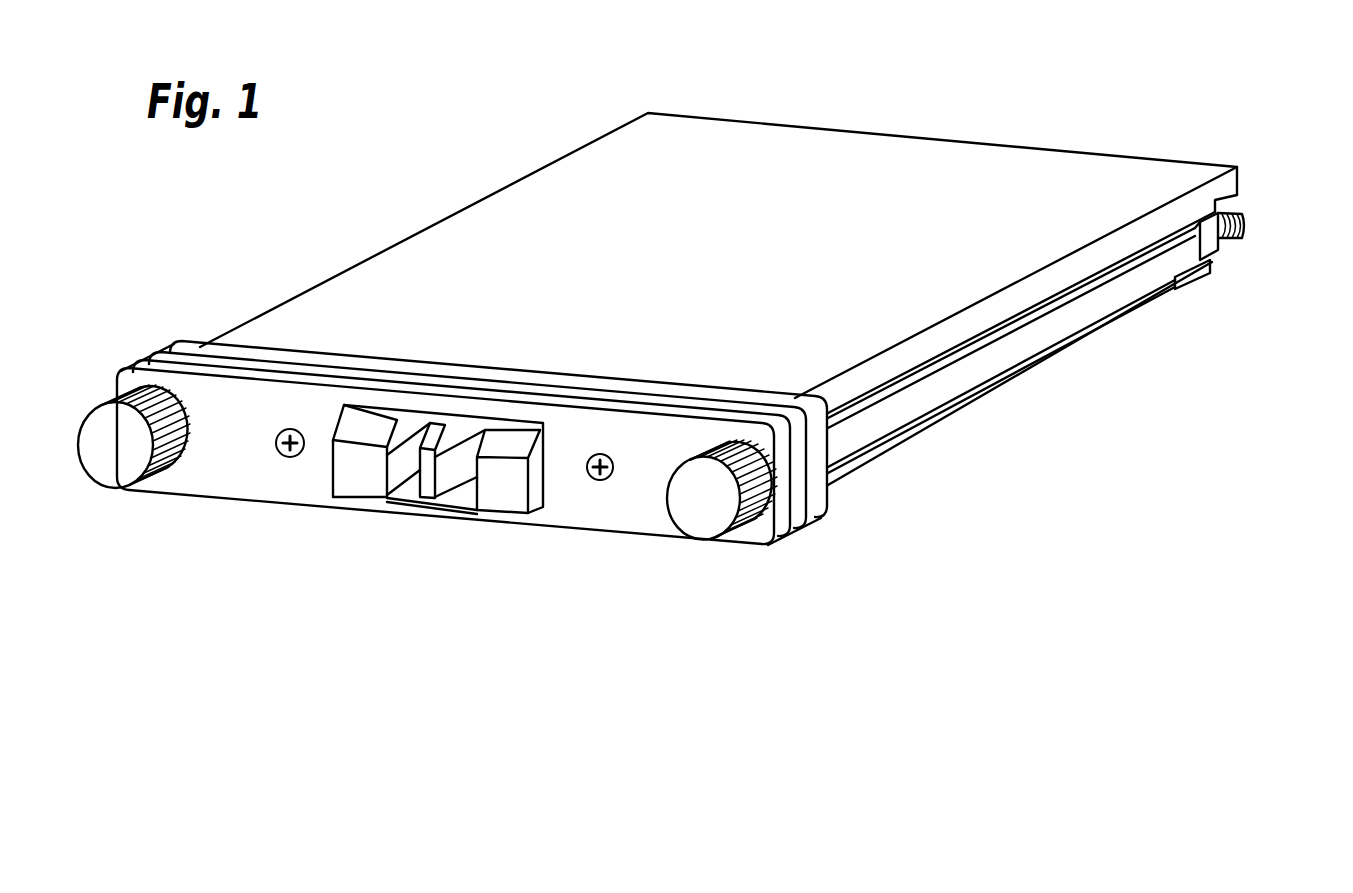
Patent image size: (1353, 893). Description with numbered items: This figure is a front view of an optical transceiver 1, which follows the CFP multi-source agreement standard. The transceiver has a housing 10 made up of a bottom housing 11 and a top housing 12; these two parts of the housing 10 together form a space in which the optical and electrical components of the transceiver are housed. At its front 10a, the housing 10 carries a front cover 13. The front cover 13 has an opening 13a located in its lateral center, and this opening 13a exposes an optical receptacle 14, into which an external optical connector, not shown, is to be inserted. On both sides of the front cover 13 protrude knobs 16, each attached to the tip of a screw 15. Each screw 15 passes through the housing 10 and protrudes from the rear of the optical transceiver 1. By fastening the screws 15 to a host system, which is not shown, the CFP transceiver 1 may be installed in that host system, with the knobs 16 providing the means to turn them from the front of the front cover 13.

The optical transceiver 1 is at (1010, 90).
The housing 10 is at (1240, 310).
The front 10a is at (848, 497).
The bottom housing 11 is at (1097, 335).
The top housing 12 is at (1097, 258).
The front cover 13 is at (803, 515).
The opening 13a is at (532, 498).
The optical receptacle 14 is at (498, 500).
The screw 15 is at (1246, 226).
The knob 16 is at (118, 468).